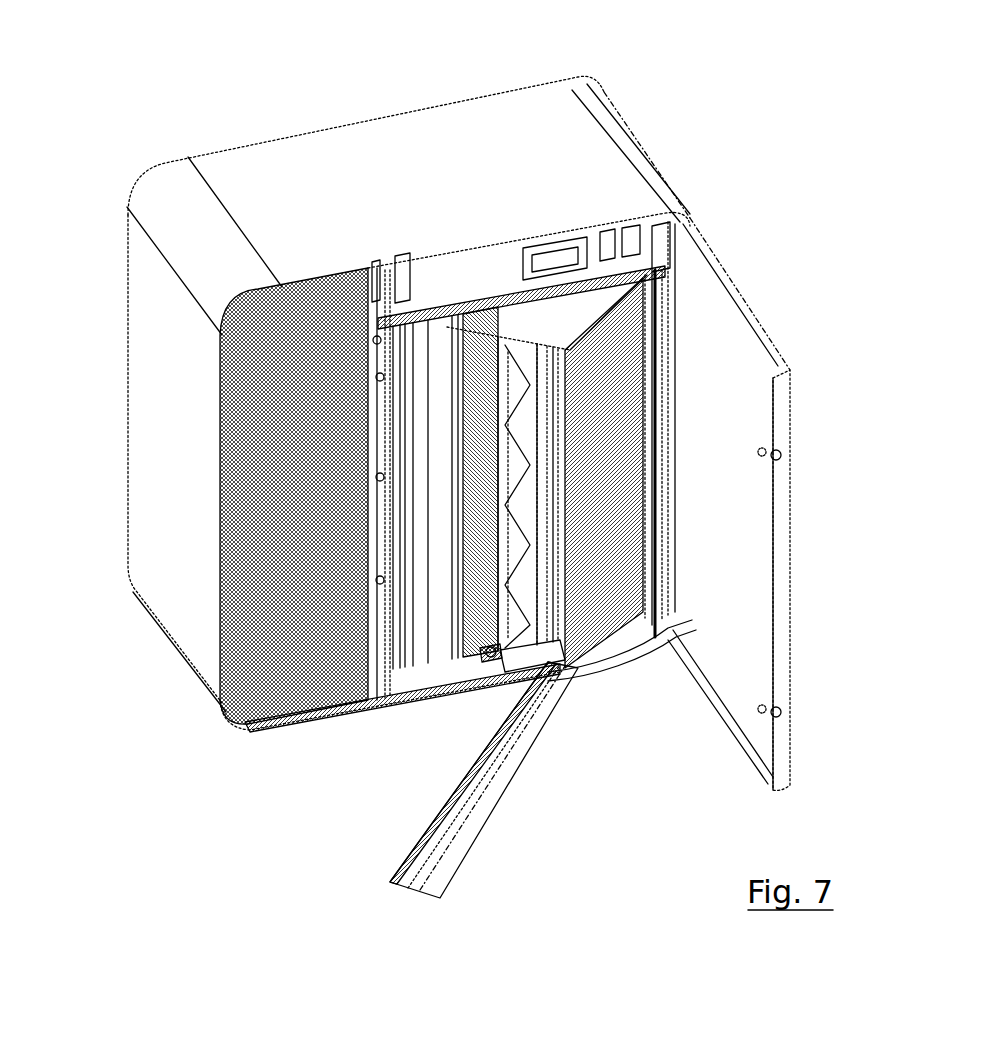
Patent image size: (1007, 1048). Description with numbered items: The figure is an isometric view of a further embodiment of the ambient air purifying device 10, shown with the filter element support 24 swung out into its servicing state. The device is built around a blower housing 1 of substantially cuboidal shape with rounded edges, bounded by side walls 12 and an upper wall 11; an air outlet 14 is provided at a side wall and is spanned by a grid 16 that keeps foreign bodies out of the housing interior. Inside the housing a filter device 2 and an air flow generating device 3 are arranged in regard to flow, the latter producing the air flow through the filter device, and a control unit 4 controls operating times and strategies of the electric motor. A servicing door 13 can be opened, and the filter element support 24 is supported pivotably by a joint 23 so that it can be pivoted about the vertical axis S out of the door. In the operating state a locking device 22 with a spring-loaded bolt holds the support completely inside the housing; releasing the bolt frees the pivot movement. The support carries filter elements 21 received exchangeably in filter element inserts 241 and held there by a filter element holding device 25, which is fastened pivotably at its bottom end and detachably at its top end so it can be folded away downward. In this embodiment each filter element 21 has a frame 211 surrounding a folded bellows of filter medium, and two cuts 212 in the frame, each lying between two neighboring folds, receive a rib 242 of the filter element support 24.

The ambient air purifying device 10 is at (664, 76).
The blower housing 1 is at (648, 160).
The upper wall 11 is at (325, 145).
The side wall 12 is at (140, 311).
The servicing door 13 is at (790, 540).
The air outlet 14 is at (310, 676).
The grid 16 is at (256, 680).
The filter device 2 is at (605, 295).
The air flow generating device 3 is at (293, 443).
The control unit 4 is at (560, 235).
The filter element 21 is at (626, 608).
The frame 211 is at (536, 402).
The cut 212 is at (530, 452).
The locking device 22 is at (490, 655).
The joint 23 is at (662, 605).
The filter element support 24 is at (517, 658).
The filter element insert 241 is at (503, 352).
The rib 242 is at (530, 452).
The filter element holding device 25 is at (436, 862).
The axis S is at (657, 347).